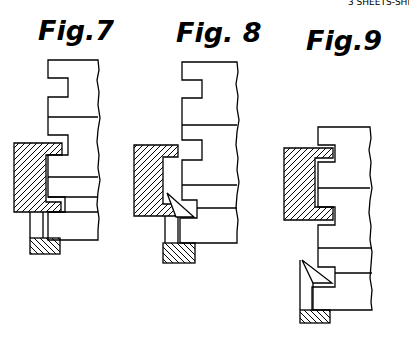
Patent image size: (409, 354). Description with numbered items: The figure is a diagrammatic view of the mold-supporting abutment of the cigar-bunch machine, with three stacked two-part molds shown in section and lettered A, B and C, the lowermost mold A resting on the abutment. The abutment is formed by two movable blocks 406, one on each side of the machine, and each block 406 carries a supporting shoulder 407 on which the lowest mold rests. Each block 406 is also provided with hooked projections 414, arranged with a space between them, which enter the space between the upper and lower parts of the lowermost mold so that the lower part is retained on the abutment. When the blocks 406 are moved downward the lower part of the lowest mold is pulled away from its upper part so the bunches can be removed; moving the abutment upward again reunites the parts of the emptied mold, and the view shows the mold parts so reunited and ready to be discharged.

In FIG. 9, the hooked projections 414 is at (307, 270).
In FIG. 9, the movable blocks 406 is at (302, 314).
In FIG. 9, the supporting shoulder 407 is at (331, 318).
In FIG. 7, the block A is at (66, 226).
In FIG. 8, the block A is at (208, 228).
In FIG. 9, the block A is at (348, 294).
In FIG. 7, the block B is at (72, 164).
In FIG. 8, the block B is at (211, 171).
In FIG. 9, the block B is at (351, 234).
In FIG. 7, the block C is at (76, 105).
In FIG. 8, the block C is at (209, 108).
In FIG. 9, the block C is at (351, 173).